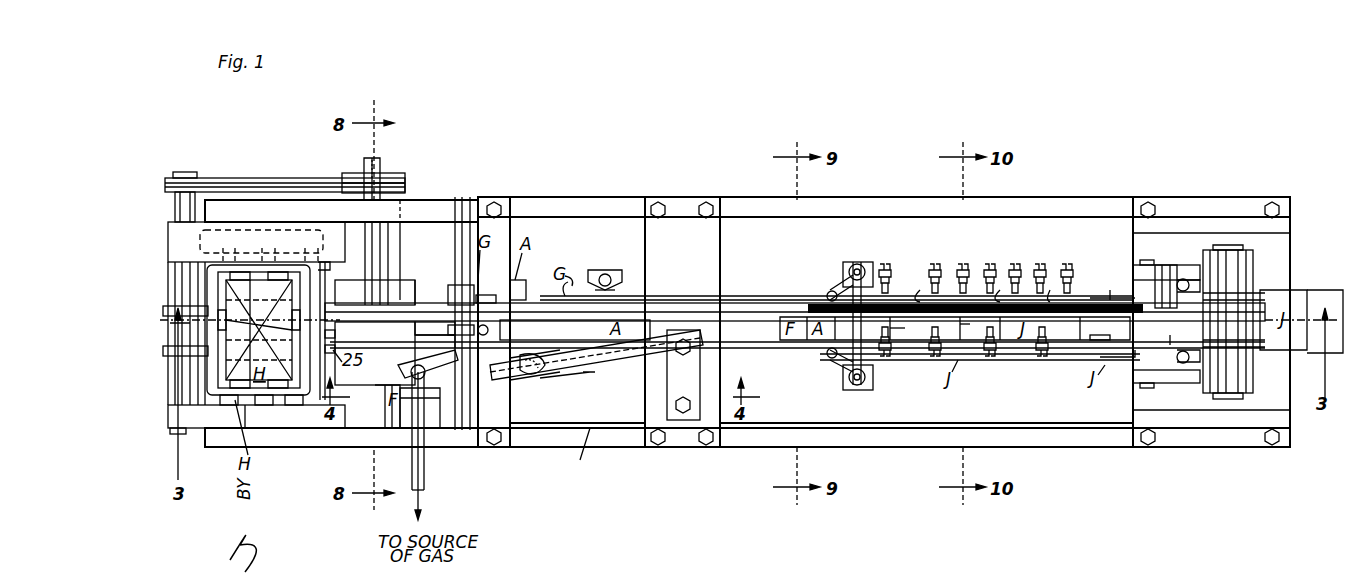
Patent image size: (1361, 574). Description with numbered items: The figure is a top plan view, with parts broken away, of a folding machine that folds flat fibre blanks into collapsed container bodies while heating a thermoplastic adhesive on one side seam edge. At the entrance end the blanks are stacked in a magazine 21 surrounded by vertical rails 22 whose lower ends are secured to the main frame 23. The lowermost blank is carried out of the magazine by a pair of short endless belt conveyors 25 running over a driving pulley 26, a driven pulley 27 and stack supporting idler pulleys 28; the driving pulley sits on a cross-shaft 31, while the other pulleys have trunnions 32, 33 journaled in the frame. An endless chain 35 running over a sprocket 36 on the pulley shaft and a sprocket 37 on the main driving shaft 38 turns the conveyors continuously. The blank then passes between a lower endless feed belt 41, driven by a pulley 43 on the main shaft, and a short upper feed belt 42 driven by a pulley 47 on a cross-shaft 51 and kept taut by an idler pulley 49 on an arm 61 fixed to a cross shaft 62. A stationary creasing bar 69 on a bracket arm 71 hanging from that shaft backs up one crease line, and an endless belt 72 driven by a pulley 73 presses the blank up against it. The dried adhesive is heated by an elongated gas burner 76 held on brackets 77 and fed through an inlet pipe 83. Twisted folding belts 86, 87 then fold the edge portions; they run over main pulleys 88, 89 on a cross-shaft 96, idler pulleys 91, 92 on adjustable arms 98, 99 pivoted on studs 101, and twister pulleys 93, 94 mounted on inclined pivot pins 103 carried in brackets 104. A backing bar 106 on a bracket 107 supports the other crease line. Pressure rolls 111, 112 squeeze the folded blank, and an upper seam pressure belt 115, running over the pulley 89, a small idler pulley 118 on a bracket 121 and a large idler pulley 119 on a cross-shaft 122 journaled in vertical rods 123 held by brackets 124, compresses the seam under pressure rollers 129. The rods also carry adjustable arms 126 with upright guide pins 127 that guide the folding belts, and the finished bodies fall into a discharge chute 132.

The magazine 21 is at (285, 400).
The rails 22 is at (285, 380).
The frame 23 is at (581, 455).
The endless belt conveyors 25 is at (320, 300).
The driving pulley 26 is at (185, 265).
The driven pulley 27 is at (320, 262).
The stack supporting idler pulleys 28 is at (240, 262).
The cross-shaft 31 is at (190, 175).
The trunnion 32 is at (300, 250).
The trunnion 33 is at (235, 250).
The endless chain 35 is at (285, 178).
The sprocket 36 is at (208, 178).
The sprocket 37 is at (395, 182).
The main driving shaft 38 is at (382, 165).
The lower endless feed belt 41 is at (760, 310).
The upper endless feed belt 42 is at (395, 315).
The driving pulley 43 is at (375, 293).
The driving pulley 47 is at (375, 353).
The idler pulley 49 is at (490, 295).
The cross-shaft 51 is at (382, 240).
The arm 61 is at (490, 330).
The cross shaft 62 is at (462, 238).
The creasing bar 69 is at (520, 350).
The bracket arm 71 is at (465, 345).
The endless belt 72 is at (425, 348).
The driving pulley 73 is at (333, 334).
The gas burner 76 is at (525, 370).
The brackets 77 is at (683, 370).
The inlet pipe 83 is at (425, 466).
The folding belt 86 is at (1068, 360).
The folding belt 87 is at (535, 296).
The main pulley 88 is at (1250, 330).
The main pulley 89 is at (1250, 300).
The idler pulley 91 is at (1110, 337).
The idler pulley 92 is at (1110, 296).
The belt twister pulley 93 is at (560, 375).
The belt twister pulley 94 is at (565, 282).
The cross-shaft 96 is at (1222, 400).
The adjustable arm 98 is at (1128, 358).
The adjustable arm 99 is at (1118, 290).
The pivot studs 101 is at (1145, 265).
The inclined pivot pins 103 is at (606, 270).
The brackets 104 is at (620, 280).
The backing bar 106 is at (540, 300).
The bracket 107 is at (452, 285).
The pressure rolls 111 is at (890, 358).
The pressure rolls 112 is at (890, 292).
The upper seam pressure belt 115 is at (940, 355).
The small idler pulley 118 is at (1150, 340).
The large idler pulley 119 is at (915, 328).
The bracket 121 is at (1170, 265).
The cross-shaft 122 is at (848, 270).
The vertical rods 123 is at (860, 265).
The brackets 124 is at (850, 265).
The adjustable arms 126 is at (835, 292).
The guide pins 127 is at (826, 296).
The pressure rollers 129 is at (935, 290).
The discharge chute 132 is at (1310, 290).